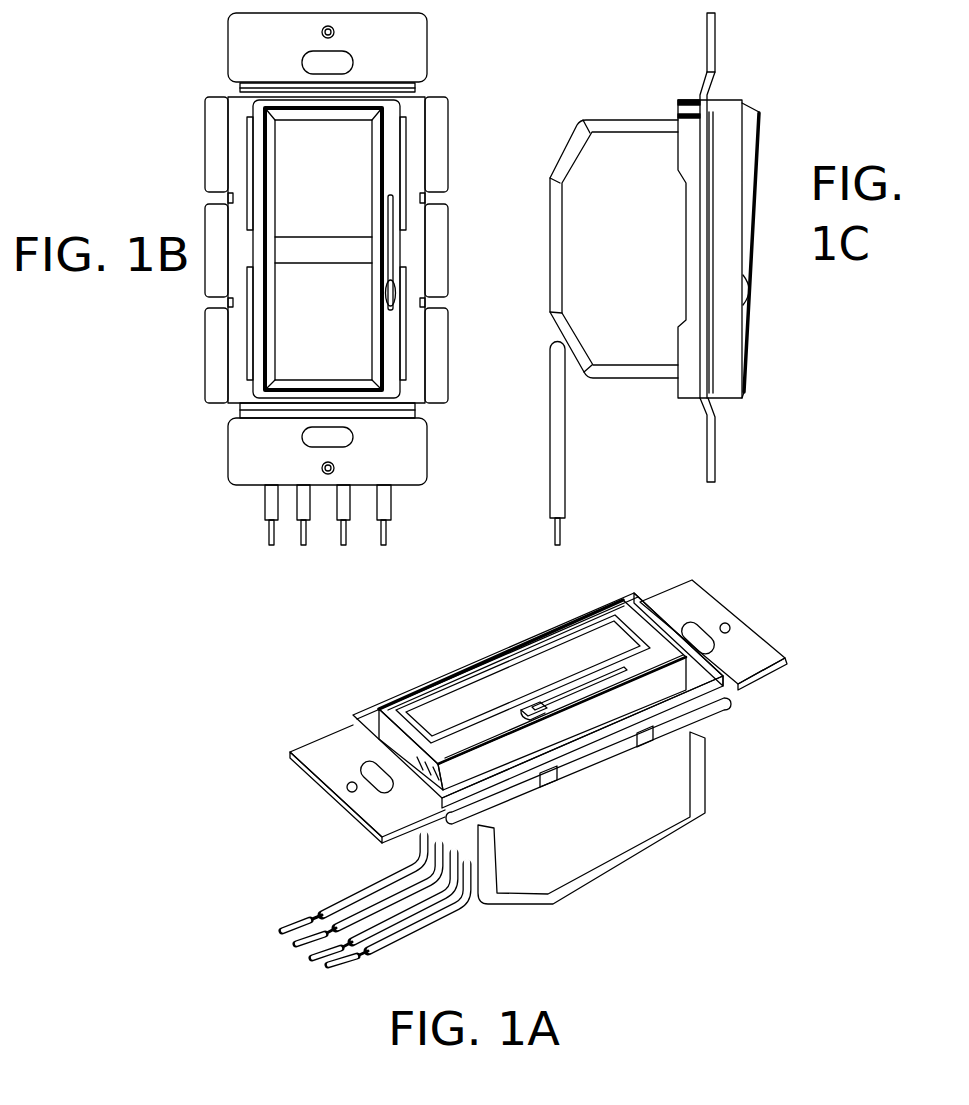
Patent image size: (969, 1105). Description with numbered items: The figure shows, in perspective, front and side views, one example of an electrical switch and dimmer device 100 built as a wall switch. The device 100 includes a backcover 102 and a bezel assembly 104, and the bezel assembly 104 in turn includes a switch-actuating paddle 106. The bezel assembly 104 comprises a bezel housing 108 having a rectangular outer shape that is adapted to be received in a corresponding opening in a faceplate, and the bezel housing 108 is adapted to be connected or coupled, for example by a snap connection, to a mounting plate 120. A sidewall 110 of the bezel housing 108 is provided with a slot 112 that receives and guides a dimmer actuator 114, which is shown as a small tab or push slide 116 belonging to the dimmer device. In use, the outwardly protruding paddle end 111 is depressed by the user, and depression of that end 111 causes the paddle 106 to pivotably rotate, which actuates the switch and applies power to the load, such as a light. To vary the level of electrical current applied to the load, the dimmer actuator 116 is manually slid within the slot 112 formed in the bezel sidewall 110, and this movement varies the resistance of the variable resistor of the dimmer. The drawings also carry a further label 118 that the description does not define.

In FIG. 1A, the electrical switch and dimmer device 100 is at (386, 681).
In FIG. 1A, the backcover 102 is at (625, 843).
In FIG. 1A, the bezel assembly 104 is at (700, 681).
In FIG. 1B, the switch-actuating paddle 106 is at (323, 249).
In FIG. 1A, the switch-actuating paddle 106 is at (523, 679).
In FIG. 1A, the bezel housing 108 is at (657, 677).
In FIG. 1A, the sidewall 110 is at (660, 735).
In FIG. 1A, the outwardly protruding paddle end 111 is at (598, 693).
In FIG. 1A, the slot 112 is at (587, 632).
In FIG. 1A, the dimmer actuator 114 is at (534, 710).
In FIG. 1A, the push slide 116 is at (522, 714).
In FIG. 1A, the faceplate frame 118 is at (432, 683).
In FIG. 1A, the mounting plate 120 is at (328, 752).